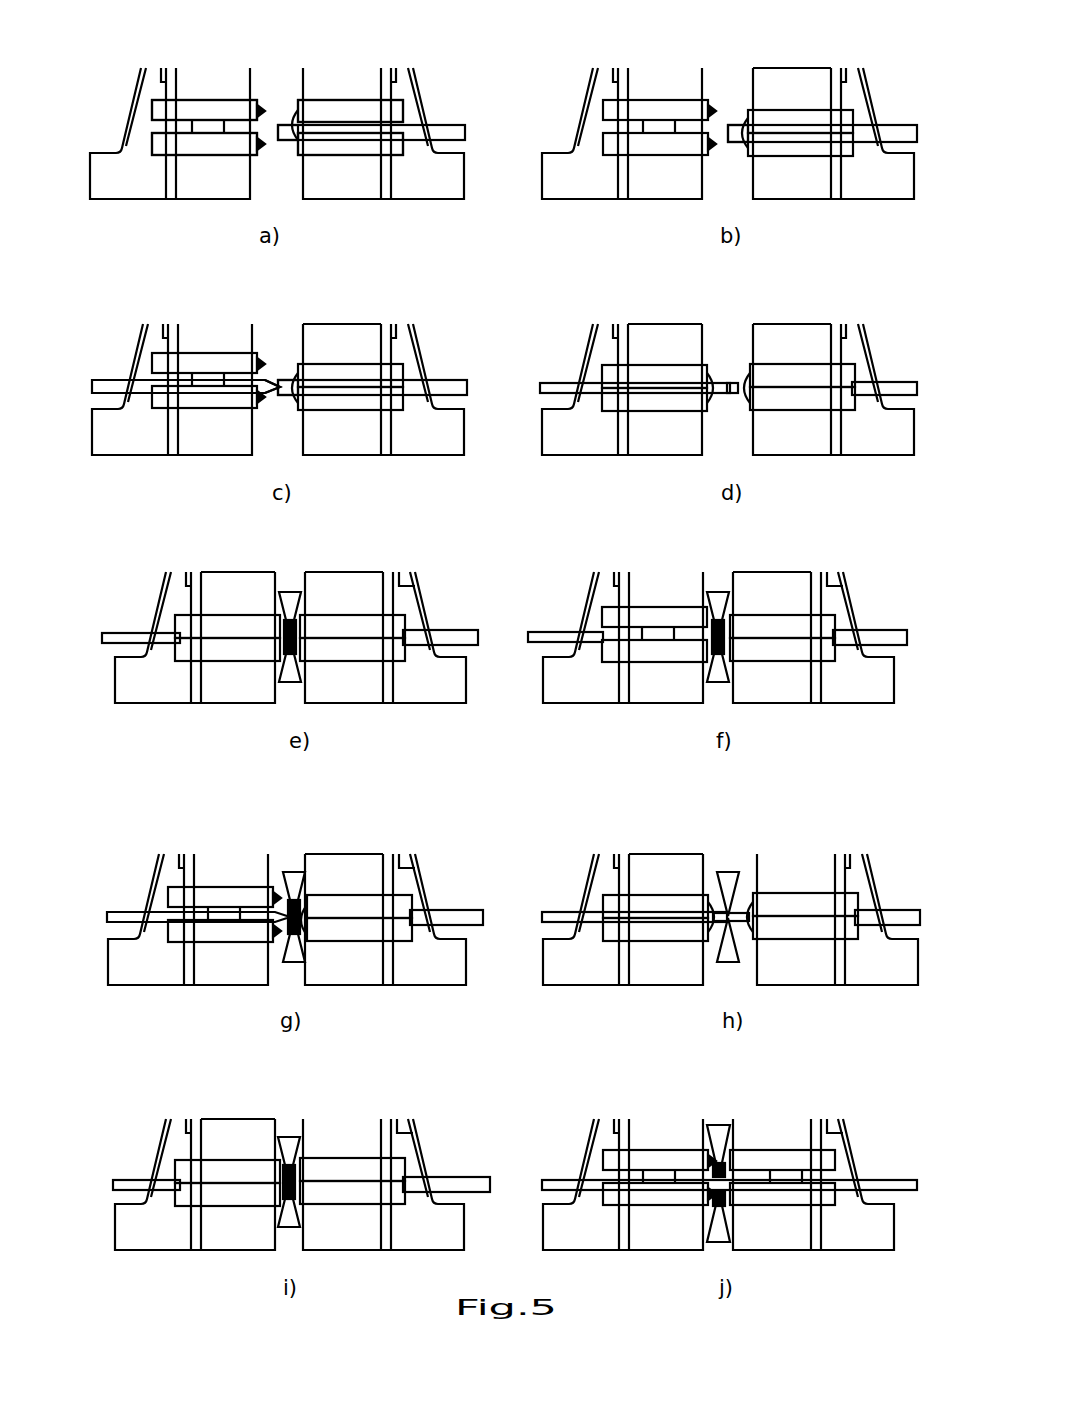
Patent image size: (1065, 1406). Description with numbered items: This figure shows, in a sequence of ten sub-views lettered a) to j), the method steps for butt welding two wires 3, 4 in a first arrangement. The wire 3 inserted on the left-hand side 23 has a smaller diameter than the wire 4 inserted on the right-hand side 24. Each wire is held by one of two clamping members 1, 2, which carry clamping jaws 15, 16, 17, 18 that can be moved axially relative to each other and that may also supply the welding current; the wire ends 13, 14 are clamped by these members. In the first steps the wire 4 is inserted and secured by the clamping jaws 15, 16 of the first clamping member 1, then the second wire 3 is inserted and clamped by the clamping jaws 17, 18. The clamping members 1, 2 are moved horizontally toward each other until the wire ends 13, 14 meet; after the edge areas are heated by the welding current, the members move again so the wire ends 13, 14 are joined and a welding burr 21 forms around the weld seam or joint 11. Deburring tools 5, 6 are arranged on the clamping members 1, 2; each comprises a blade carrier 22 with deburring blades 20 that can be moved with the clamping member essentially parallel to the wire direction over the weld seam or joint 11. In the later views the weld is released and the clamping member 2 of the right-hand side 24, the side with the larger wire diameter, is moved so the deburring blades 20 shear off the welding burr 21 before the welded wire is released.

The first clamping member 1 is at (120, 113).
The second clamping member 2 is at (432, 102).
The wire 3 is at (117, 387).
The wire 4 is at (448, 135).
The deburring tool 5 is at (260, 143).
The deburring tool 6 is at (292, 143).
The weld seam or joint 11 is at (280, 390).
The wire end 13 is at (277, 388).
The wire end 14 is at (282, 137).
The clamping jaw 15 is at (162, 115).
The clamping jaw 16 is at (163, 150).
The clamping jaw 17 is at (397, 107).
The clamping jaw 18 is at (395, 143).
The deburring blade 20 is at (290, 702).
The welding burr 21 is at (288, 670).
The blade carrier 22 is at (273, 166).
The left-hand side 23 is at (214, 72).
The right-hand side 24 is at (348, 72).